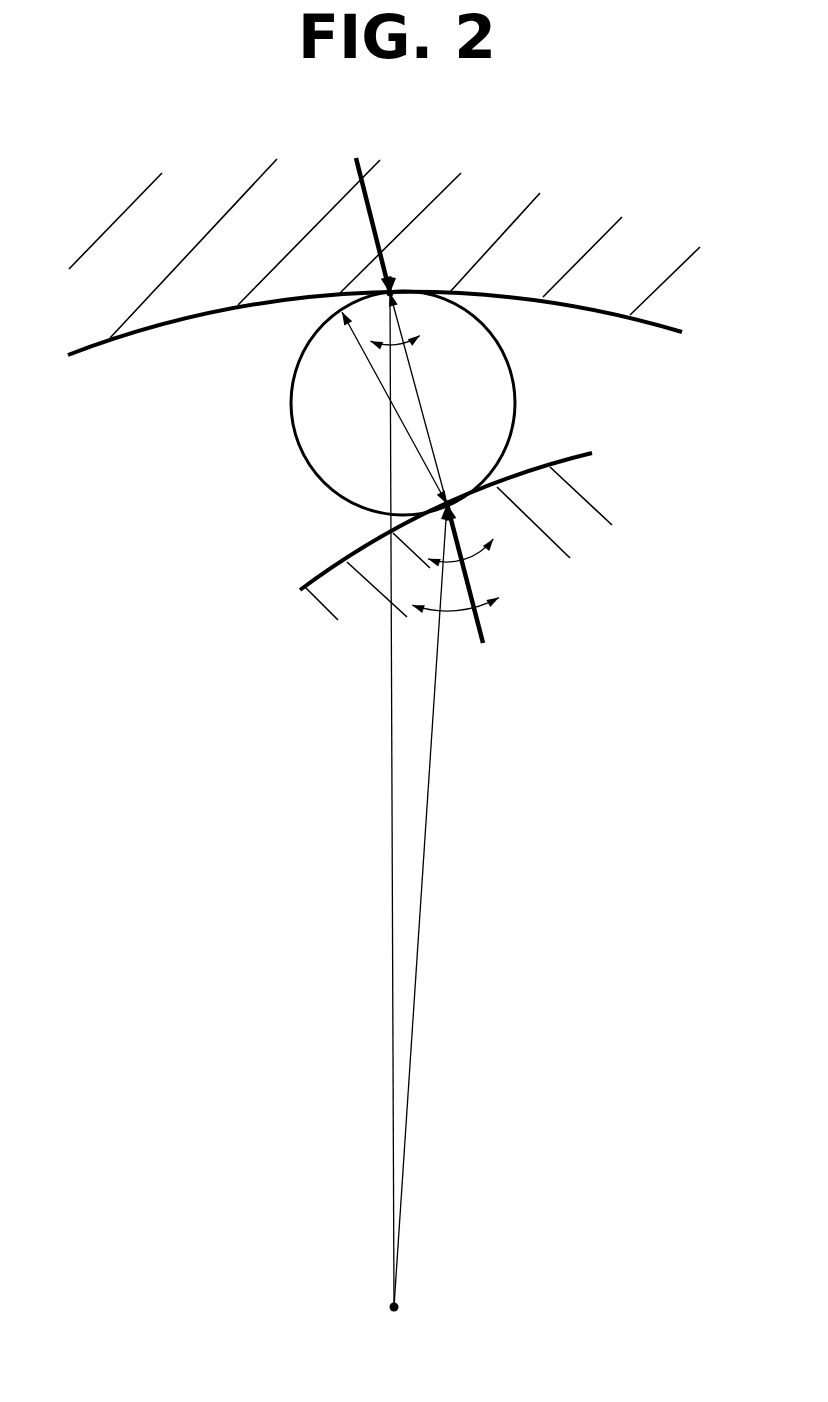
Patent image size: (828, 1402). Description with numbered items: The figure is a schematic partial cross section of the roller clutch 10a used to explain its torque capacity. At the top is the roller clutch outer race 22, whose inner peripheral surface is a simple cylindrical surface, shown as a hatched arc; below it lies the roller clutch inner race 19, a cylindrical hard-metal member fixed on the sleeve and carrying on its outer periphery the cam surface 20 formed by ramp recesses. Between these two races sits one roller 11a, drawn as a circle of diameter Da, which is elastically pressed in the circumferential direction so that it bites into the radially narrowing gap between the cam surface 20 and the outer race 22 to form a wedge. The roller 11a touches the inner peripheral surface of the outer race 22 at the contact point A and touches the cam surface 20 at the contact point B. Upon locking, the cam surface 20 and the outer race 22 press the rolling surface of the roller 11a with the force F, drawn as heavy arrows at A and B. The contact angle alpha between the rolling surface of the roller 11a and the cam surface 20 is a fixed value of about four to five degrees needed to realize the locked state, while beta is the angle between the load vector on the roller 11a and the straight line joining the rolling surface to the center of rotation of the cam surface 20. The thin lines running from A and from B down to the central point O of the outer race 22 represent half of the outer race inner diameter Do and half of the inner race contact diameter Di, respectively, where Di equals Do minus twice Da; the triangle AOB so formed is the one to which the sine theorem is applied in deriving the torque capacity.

The roller clutch outer race 22 is at (538, 258).
The cam surface 20 is at (387, 535).
The roller clutch 10a is at (345, 588).
The roller clutch inner race 19 is at (557, 517).
The roller 11a is at (328, 410).
The pressing force F is at (375, 213).
The contact point A is at (400, 283).
The contact point B is at (456, 493).
The roller diameter Da is at (377, 375).
The contact angle alpha is at (400, 350).
The angle of intersection beta is at (452, 617).
The outer race inner peripheral surface diameter Do is at (393, 807).
The inner race contact diameter Di is at (428, 803).
The central point of roller clutch outer race O is at (400, 1305).